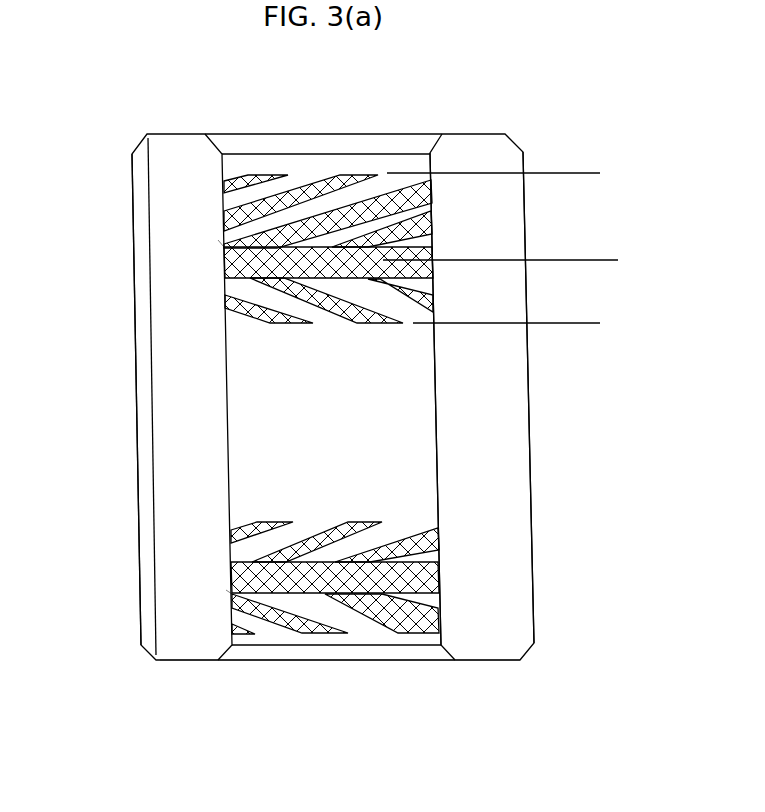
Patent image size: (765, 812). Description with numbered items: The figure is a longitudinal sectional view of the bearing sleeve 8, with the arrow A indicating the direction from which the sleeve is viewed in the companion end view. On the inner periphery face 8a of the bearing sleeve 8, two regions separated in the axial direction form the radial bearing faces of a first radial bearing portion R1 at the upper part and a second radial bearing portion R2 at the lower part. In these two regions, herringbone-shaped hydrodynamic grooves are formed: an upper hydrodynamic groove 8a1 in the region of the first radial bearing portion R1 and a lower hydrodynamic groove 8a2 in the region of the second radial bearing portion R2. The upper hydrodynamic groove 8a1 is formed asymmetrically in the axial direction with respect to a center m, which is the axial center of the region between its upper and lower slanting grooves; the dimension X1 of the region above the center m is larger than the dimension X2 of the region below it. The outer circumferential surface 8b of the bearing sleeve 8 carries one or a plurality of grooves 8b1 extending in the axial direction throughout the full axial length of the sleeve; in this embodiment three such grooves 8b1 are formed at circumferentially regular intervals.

The bearing sleeve 8 is at (107, 142).
The inner periphery face 8a is at (434, 401).
The upper hydrodynamic groove 8a1 is at (278, 187).
The lower hydrodynamic groove 8a2 is at (268, 529).
The outer circumferential surface 8b is at (143, 378).
The axial groove 8b1 is at (154, 425).
The first radial bearing portion R1 is at (222, 244).
The second radial bearing portion R2 is at (232, 588).
The axial dimension of the region above the center X1 is at (590, 173).
The axial dimension of the region below the center X2 is at (590, 260).
The axial center m is at (516, 259).
The arrow A is at (218, 678).